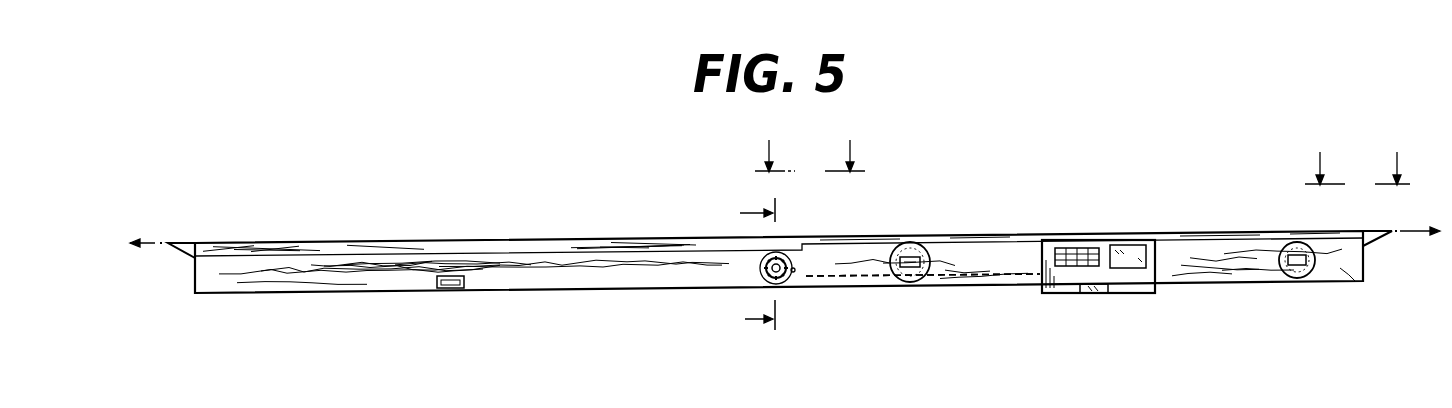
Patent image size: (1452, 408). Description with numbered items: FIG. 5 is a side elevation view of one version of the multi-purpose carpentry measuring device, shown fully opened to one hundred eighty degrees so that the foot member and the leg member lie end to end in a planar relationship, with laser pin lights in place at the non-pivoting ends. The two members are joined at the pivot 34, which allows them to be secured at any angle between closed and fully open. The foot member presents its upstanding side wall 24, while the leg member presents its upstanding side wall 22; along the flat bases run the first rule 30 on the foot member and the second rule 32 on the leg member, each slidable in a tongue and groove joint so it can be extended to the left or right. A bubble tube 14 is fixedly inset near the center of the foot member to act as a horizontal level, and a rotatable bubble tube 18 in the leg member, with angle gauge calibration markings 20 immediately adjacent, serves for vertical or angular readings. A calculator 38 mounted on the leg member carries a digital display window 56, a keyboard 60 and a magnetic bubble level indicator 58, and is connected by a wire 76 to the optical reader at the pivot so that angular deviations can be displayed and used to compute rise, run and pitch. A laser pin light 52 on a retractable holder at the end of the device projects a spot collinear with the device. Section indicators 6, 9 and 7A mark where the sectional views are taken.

The bubble tube 14 is at (455, 290).
The bubble tube 18 is at (1295, 282).
The angle gauge calibration markings 20 is at (1330, 273).
The upstanding side wall 22 is at (1205, 284).
The upstanding side wall 24 is at (522, 292).
The first rule 30 is at (573, 237).
The second rule 32 is at (1140, 232).
The pivot 34 is at (766, 267).
The calculator 38 is at (1040, 290).
The laser pin light 52 is at (1390, 240).
The digital display window 56 is at (1125, 247).
The magnetic bubble level indicator 58 is at (1098, 292).
The keyboard 60 is at (1066, 250).
The wire 76 is at (862, 290).
The section line 6- 6 is at (806, 161).
The section line 9- 9 is at (748, 264).
The section line 7A- 7A is at (1354, 174).